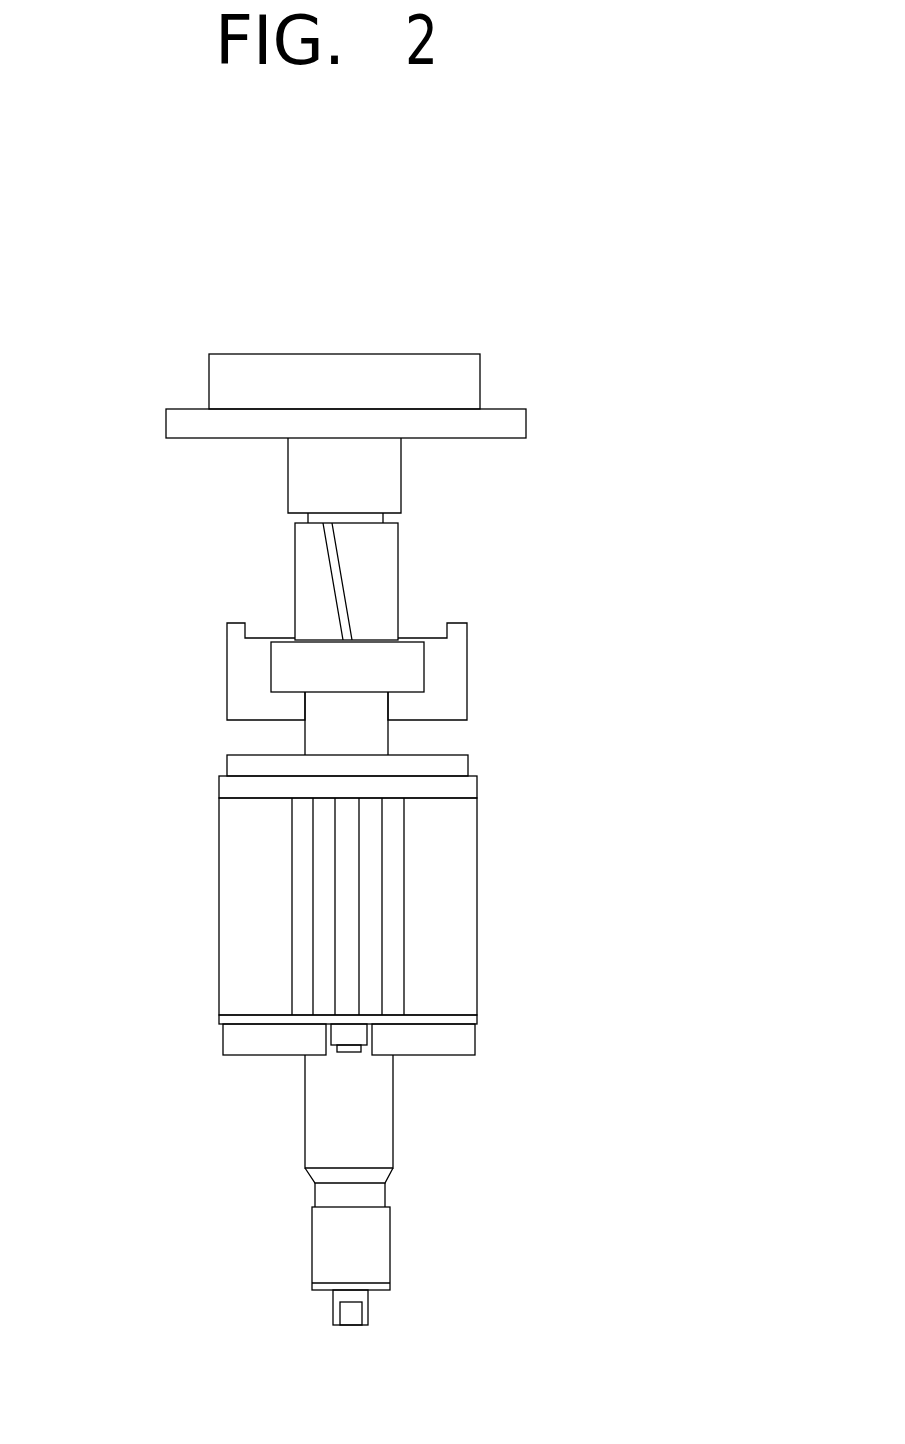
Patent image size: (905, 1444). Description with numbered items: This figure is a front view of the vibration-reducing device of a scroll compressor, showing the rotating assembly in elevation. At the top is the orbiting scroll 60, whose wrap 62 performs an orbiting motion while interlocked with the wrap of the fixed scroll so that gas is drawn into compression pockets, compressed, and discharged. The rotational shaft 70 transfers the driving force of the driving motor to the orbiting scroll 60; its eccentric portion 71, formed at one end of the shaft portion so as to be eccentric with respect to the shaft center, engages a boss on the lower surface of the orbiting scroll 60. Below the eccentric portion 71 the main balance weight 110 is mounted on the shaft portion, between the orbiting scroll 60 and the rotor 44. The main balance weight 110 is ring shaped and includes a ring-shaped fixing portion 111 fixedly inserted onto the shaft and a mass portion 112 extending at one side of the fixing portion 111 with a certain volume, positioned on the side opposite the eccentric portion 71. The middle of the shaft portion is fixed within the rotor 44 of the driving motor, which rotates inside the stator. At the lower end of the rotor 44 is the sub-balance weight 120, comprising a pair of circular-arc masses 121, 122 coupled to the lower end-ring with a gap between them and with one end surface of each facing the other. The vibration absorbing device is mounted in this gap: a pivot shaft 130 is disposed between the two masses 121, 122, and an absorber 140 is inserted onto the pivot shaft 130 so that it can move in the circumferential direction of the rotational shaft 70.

The rotor 44 is at (487, 850).
The orbiting scroll 60 is at (518, 367).
The wrap 62 is at (253, 366).
The rotational shaft 70 is at (416, 586).
The eccentric portion 71 is at (383, 513).
The main balance weight 110 is at (246, 677).
The ring-shaped fixing portion 111 is at (288, 662).
The mass portion 112 is at (242, 702).
The sub-balance weight 120 is at (267, 1100).
The mass 121 is at (240, 1043).
The mass 122 is at (452, 1043).
The pivot shaft 130 is at (348, 1060).
The absorber 140 is at (332, 1058).